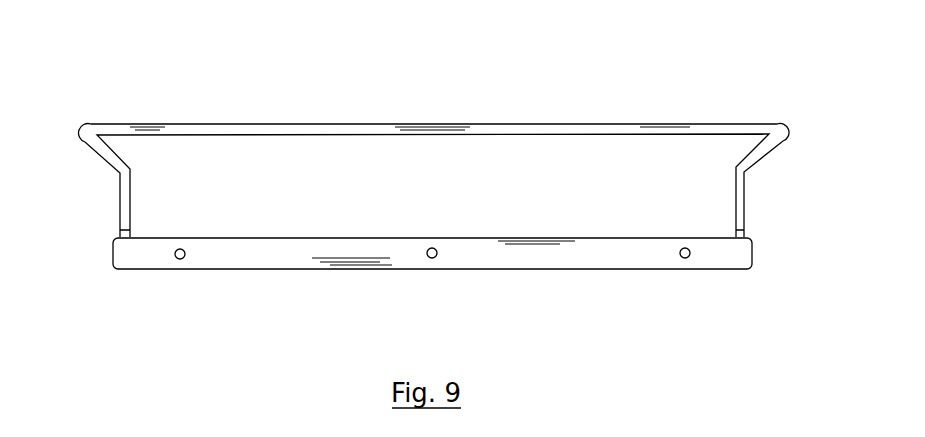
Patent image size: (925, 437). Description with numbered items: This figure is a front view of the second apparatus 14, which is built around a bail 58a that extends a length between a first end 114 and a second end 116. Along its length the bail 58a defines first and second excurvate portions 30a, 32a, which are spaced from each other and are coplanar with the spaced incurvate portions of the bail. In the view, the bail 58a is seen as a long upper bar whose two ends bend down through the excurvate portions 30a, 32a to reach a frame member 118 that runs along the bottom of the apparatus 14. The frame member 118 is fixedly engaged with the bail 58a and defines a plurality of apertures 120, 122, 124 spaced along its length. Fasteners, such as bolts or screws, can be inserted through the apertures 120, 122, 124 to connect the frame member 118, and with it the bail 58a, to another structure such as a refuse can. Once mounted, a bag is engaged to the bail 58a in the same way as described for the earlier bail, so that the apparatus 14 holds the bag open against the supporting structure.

The apparatus 14 is at (800, 151).
The bail 58a is at (302, 131).
The first excurvate portion 30a is at (131, 170).
The second excurvate portion 32a is at (735, 170).
The first end 114 is at (96, 252).
The second end 116 is at (762, 223).
The frame member 118 is at (268, 259).
The aperture 120 is at (183, 259).
The aperture 122 is at (436, 258).
The aperture 124 is at (682, 259).